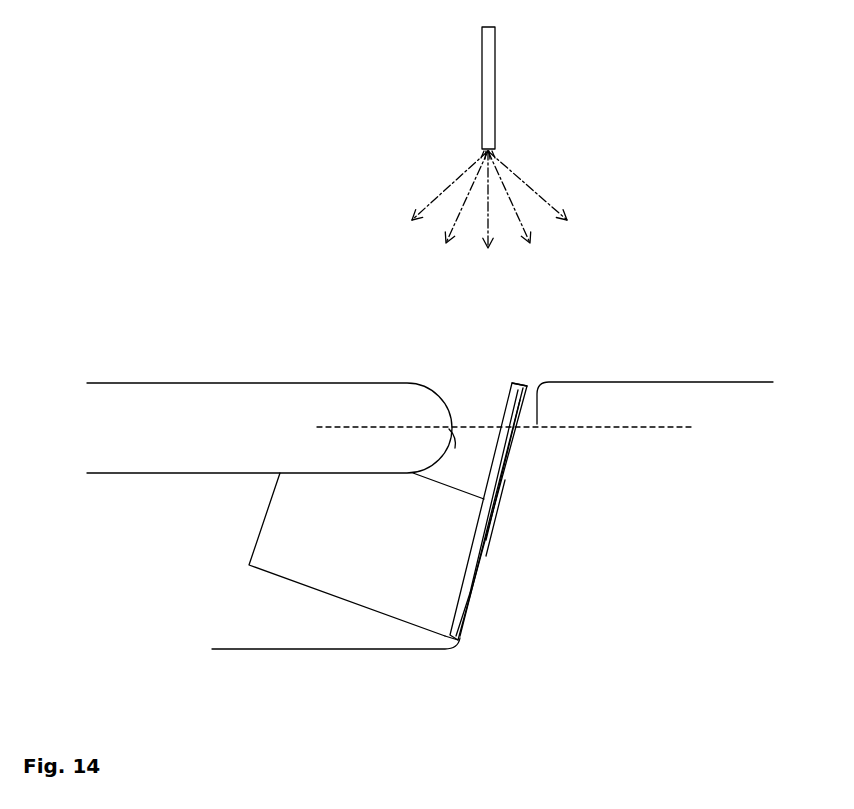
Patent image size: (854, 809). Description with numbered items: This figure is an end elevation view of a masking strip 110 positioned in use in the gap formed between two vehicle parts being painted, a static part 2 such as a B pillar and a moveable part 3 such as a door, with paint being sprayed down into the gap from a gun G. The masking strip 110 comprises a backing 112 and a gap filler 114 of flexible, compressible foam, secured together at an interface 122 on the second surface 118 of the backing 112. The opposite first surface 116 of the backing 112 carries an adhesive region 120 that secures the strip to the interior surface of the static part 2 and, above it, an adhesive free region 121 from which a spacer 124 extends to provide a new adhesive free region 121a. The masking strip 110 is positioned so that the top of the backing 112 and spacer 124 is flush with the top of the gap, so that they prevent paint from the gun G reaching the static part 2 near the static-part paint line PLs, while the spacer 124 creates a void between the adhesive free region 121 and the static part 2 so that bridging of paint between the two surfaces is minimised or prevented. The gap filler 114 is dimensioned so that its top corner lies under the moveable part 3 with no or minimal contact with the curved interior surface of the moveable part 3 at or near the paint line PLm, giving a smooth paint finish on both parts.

The gun G is at (490, 58).
The moveable part 3 is at (154, 435).
The static part 2 is at (710, 558).
The paint line on the static part PLs is at (528, 426).
The paint line on the moveable part PLm is at (463, 453).
The masking strip 110 is at (248, 530).
The backing 112 is at (519, 387).
The gap filler 114 is at (340, 580).
The first surface 116 is at (505, 483).
The second surface 118 is at (510, 396).
The adhesive region 120 is at (470, 593).
The adhesive free region 121 is at (513, 415).
The new adhesive free region 121a is at (517, 437).
The interface 122 is at (447, 620).
The spacer 124 is at (510, 463).